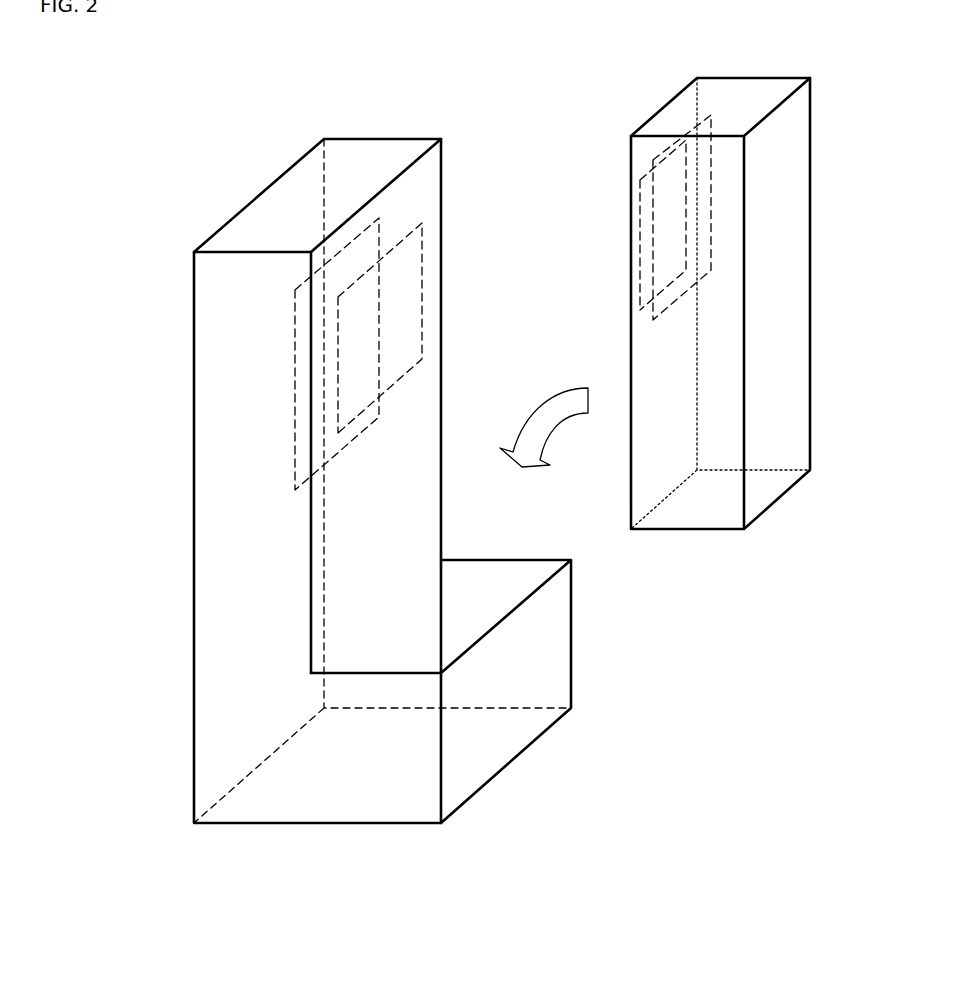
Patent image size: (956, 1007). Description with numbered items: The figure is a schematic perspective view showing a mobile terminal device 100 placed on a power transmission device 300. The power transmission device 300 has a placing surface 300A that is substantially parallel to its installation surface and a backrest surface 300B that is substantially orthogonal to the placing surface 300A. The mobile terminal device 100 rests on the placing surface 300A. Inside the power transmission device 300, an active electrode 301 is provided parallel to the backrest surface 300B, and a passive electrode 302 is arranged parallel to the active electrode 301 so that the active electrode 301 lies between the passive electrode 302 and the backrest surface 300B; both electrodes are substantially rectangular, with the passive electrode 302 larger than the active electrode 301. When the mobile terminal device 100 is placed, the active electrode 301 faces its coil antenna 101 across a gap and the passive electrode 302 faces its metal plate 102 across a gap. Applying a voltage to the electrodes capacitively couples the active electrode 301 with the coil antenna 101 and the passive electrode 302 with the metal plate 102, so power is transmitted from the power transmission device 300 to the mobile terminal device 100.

The power transmission device 300 is at (324, 139).
The placing surface 300A is at (483, 568).
The backrest surface 300B is at (436, 199).
The active electrode 301 is at (422, 357).
The passive electrode 302 is at (379, 417).
The mobile terminal device 100 is at (697, 78).
The coil antenna 101 is at (640, 180).
The metal plate 102 is at (711, 115).